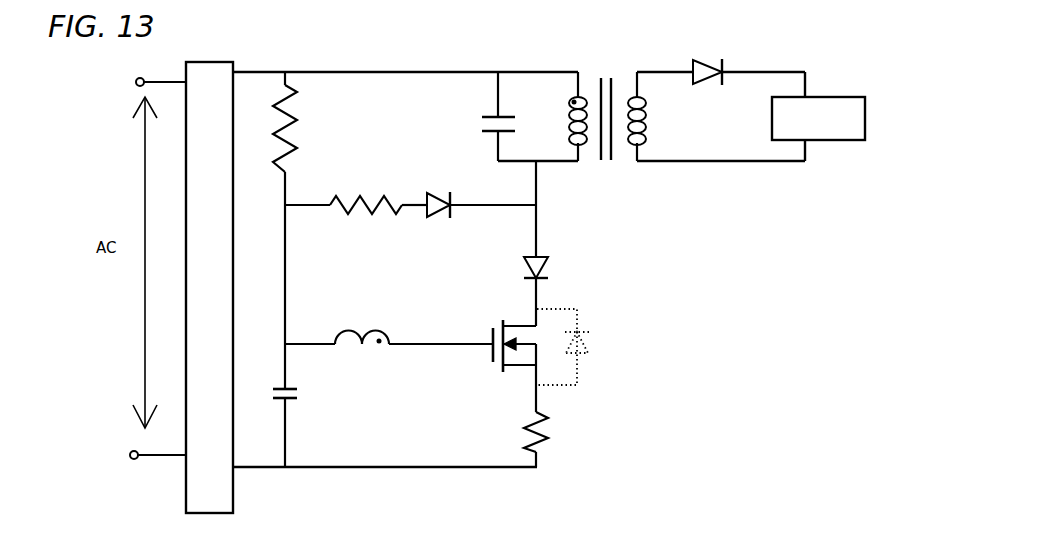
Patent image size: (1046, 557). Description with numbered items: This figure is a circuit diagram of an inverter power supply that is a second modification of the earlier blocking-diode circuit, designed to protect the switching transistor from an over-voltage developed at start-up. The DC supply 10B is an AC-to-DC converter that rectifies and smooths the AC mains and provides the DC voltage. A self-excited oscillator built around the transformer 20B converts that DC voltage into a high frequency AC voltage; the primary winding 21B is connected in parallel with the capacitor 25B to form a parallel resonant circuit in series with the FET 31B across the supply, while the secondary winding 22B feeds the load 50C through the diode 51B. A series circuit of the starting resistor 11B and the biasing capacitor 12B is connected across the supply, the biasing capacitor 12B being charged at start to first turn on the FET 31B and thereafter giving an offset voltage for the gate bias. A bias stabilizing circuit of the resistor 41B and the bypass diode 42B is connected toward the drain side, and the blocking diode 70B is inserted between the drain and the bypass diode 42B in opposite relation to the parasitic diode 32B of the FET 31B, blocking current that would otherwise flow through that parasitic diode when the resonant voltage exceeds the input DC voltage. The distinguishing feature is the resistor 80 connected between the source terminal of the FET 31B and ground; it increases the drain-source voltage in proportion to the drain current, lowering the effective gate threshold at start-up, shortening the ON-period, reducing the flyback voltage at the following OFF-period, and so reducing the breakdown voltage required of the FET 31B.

The DC supply 10B is at (215, 48).
The starting resistor 11B is at (305, 122).
The biasing capacitor 12B is at (302, 390).
The transformer 20B is at (615, 84).
The primary winding 21B is at (563, 120).
The secondary winding 22B is at (652, 127).
The capacitor 25B is at (473, 123).
The FET 31B is at (483, 330).
The parasitic diode 32B is at (594, 347).
The resistor 41B is at (363, 188).
The bypass diode 42B is at (443, 188).
The load 50C is at (855, 87).
The diode 51B is at (703, 50).
The blocking diode 70B is at (543, 248).
The resistor 80 is at (550, 430).